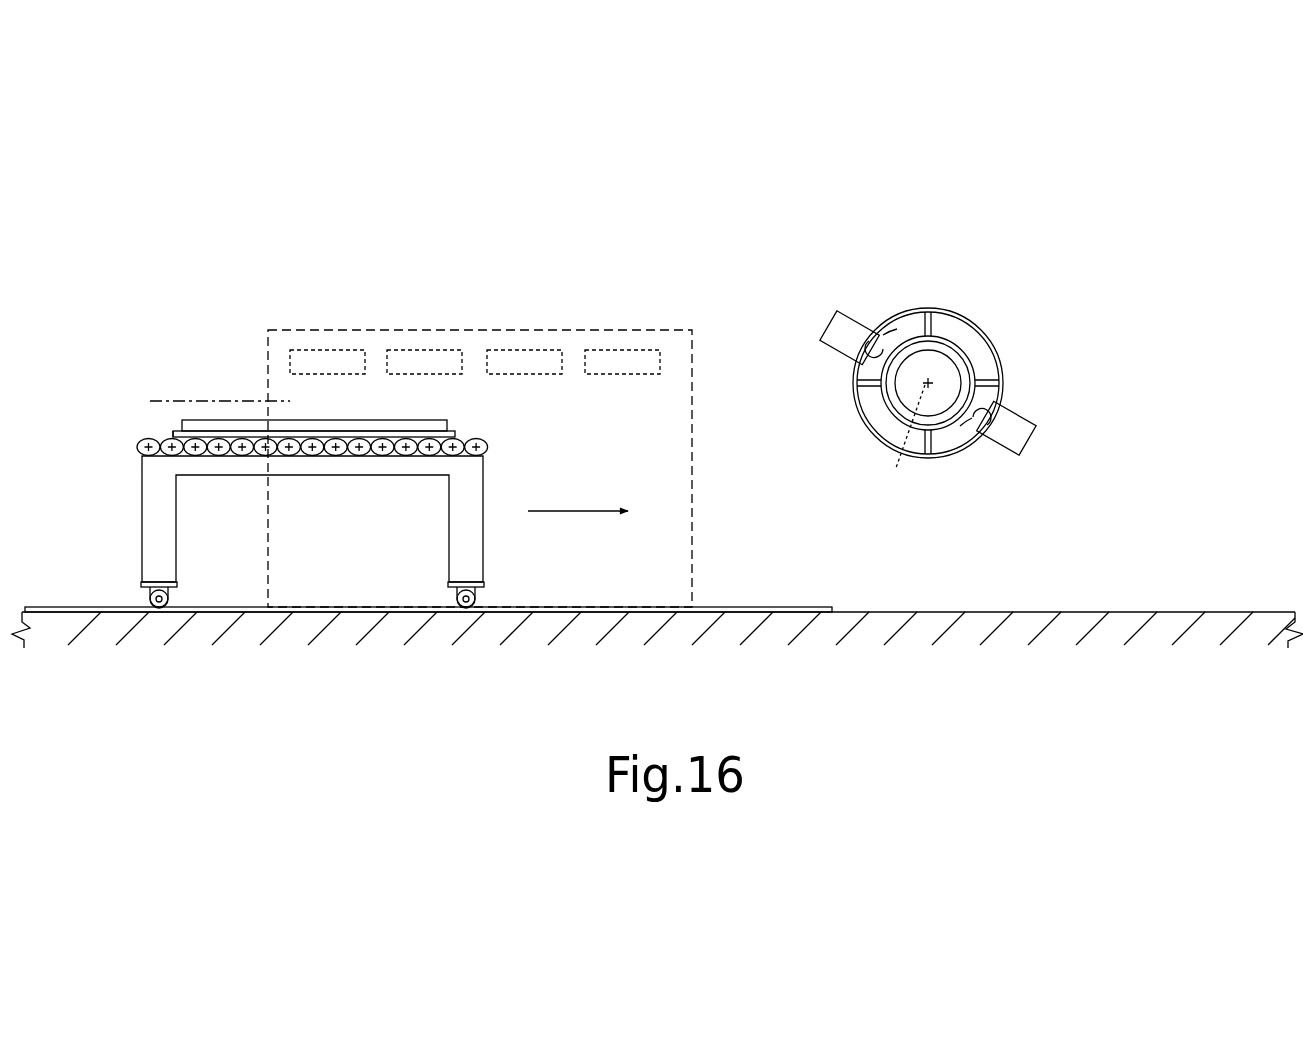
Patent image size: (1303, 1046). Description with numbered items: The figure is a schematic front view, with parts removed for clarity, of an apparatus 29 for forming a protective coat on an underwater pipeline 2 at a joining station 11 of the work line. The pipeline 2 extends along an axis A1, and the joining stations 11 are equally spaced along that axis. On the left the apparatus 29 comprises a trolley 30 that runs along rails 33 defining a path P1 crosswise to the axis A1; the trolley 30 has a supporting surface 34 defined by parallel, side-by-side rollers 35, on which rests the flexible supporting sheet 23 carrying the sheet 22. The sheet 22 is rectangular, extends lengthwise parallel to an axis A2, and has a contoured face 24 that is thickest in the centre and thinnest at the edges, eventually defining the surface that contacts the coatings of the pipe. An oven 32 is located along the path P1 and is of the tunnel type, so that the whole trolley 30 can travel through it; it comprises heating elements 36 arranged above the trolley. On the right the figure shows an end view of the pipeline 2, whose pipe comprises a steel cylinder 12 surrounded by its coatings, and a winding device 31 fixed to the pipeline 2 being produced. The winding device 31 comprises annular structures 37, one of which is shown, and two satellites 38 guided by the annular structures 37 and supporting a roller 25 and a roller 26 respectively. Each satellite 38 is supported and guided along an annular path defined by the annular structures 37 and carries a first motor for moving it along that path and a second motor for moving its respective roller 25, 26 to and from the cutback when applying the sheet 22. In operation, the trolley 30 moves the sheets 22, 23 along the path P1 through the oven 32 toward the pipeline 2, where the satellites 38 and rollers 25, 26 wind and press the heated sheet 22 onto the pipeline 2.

The joining station 11 is at (550, 196).
The apparatus 29 is at (326, 230).
The oven 32 is at (618, 302).
The heating elements 36 is at (332, 360).
The axis A2 is at (180, 400).
The flexible supporting sheet 23 is at (164, 427).
The contoured face 24 is at (317, 417).
The sheet 22 is at (381, 411).
The supporting surface 34 is at (351, 461).
The rollers 35 is at (490, 445).
The trolley 30 is at (128, 527).
The path P1 is at (600, 510).
The rails 33 is at (765, 607).
The underwater pipeline 2 is at (938, 381).
The winding device 31 is at (938, 382).
The annular structures 37 is at (992, 340).
The steel cylinder 12 is at (893, 397).
The roller 25 is at (893, 335).
The roller 26 is at (971, 450).
The satellites 38 is at (835, 337).
The axis A1 is at (902, 441).